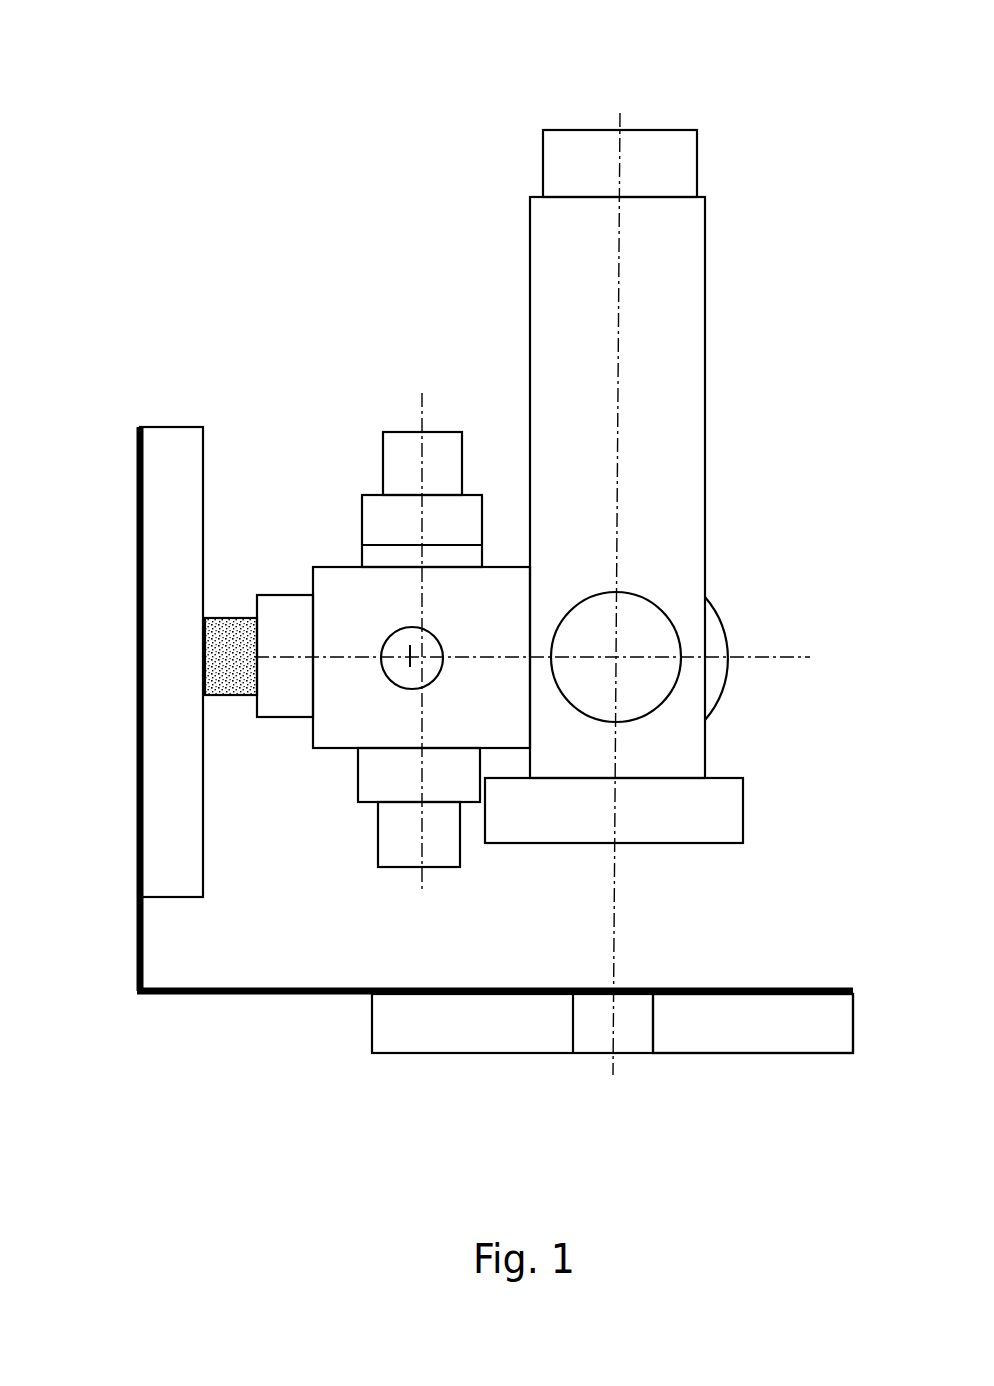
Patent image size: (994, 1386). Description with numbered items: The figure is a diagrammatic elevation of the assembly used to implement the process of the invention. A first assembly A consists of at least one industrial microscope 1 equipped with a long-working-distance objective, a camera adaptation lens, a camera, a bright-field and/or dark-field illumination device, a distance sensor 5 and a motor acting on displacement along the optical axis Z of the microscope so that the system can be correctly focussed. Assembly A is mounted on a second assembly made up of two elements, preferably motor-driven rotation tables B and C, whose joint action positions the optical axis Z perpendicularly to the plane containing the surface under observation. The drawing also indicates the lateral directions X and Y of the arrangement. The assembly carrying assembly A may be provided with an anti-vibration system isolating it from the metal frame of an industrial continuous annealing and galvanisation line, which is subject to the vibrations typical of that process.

The industrial microscope 1 is at (644, 632).
The distance sensor 5 is at (667, 808).
The first assembly A is at (572, 398).
The rotation table B is at (177, 463).
The X-axis slide X is at (230, 647).
The Y-axis slide Y is at (593, 1018).
The optical axis Z is at (395, 668).
The rotation table C is at (763, 1018).